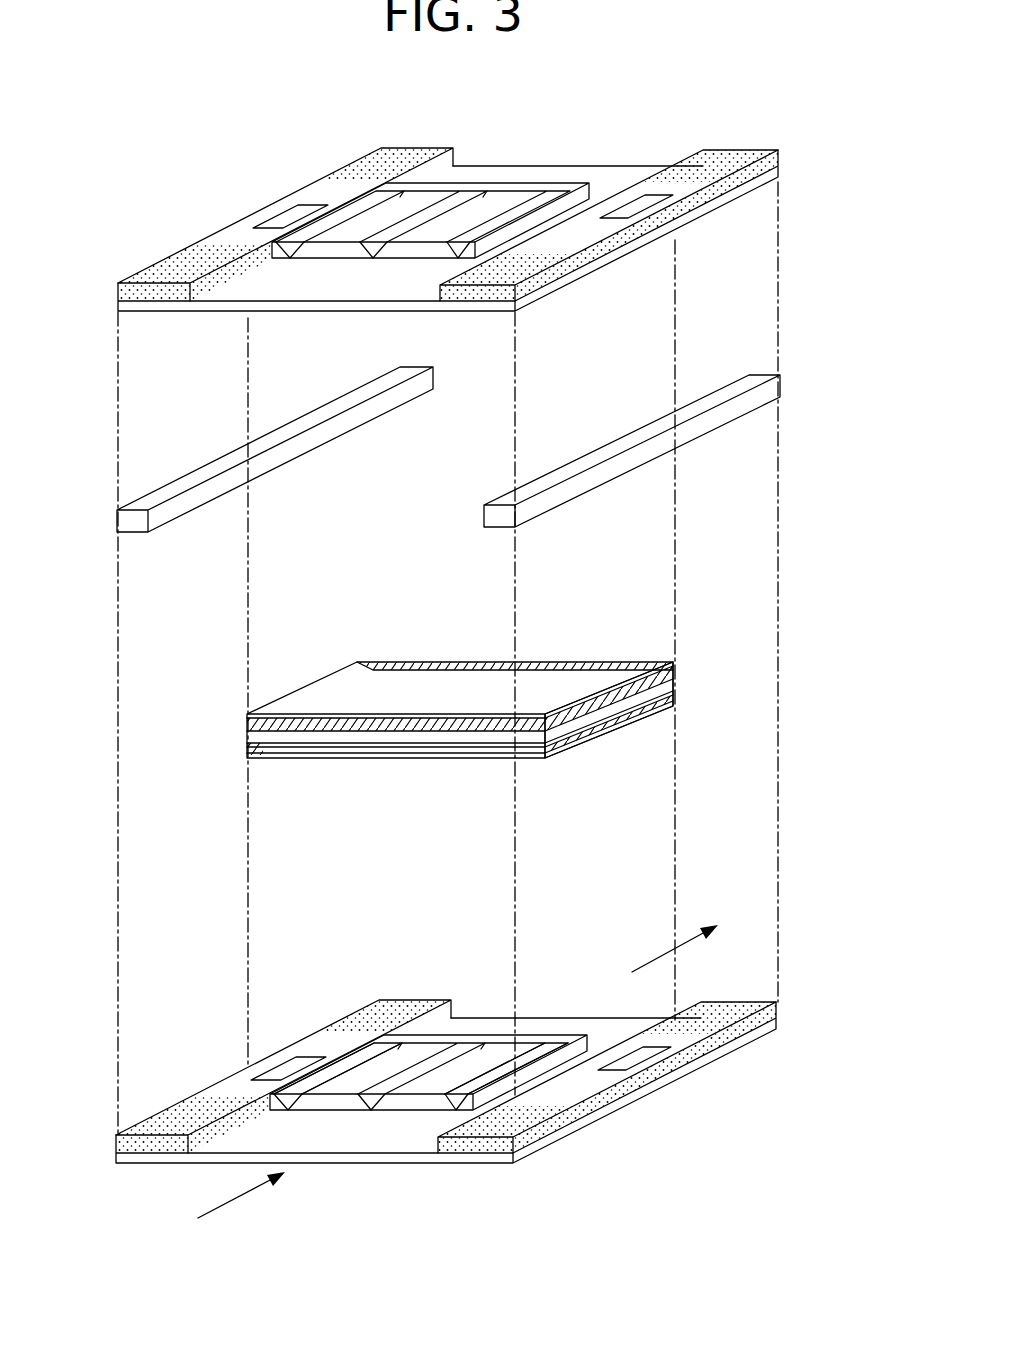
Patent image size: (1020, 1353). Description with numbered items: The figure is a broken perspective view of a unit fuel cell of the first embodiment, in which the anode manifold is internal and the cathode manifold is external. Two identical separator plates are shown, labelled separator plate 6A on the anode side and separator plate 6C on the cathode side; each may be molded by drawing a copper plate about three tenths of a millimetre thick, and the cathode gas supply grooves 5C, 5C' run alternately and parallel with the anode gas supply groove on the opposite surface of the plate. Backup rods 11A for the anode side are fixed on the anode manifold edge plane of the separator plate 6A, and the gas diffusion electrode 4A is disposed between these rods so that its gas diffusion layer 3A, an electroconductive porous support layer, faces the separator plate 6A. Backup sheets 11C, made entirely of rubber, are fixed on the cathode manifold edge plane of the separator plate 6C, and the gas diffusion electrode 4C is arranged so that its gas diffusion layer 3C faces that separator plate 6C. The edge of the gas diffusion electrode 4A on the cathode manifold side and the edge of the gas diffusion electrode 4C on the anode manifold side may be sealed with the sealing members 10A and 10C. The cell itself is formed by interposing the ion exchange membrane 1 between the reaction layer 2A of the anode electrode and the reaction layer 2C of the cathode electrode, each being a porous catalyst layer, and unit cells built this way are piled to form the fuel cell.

The ion exchange membrane 1 is at (505, 759).
The reaction layer 2A is at (730, 708).
The gas diffusion layer 3A is at (505, 702).
The gas diffusion electrode 4A is at (505, 714).
The reaction layer 2C is at (460, 758).
The gas diffusion layer 3C is at (324, 793).
The gas diffusion electrode 4C is at (460, 776).
The sealing member 10A is at (483, 736).
The sealing member 10C is at (603, 735).
The separator plate 6A is at (732, 150).
The separator plate 6C is at (446, 1093).
The backup rods 11A is at (133, 523).
The backup sheets 11C is at (730, 1007).
The cathode gas supply groove 5C is at (428, 1140).
The cathode gas supply groove 5C' is at (448, 1018).